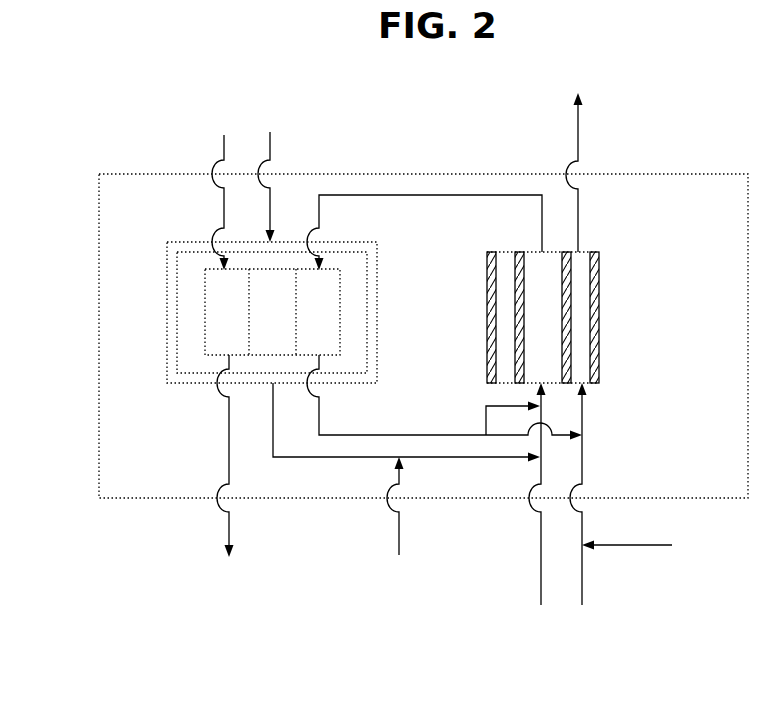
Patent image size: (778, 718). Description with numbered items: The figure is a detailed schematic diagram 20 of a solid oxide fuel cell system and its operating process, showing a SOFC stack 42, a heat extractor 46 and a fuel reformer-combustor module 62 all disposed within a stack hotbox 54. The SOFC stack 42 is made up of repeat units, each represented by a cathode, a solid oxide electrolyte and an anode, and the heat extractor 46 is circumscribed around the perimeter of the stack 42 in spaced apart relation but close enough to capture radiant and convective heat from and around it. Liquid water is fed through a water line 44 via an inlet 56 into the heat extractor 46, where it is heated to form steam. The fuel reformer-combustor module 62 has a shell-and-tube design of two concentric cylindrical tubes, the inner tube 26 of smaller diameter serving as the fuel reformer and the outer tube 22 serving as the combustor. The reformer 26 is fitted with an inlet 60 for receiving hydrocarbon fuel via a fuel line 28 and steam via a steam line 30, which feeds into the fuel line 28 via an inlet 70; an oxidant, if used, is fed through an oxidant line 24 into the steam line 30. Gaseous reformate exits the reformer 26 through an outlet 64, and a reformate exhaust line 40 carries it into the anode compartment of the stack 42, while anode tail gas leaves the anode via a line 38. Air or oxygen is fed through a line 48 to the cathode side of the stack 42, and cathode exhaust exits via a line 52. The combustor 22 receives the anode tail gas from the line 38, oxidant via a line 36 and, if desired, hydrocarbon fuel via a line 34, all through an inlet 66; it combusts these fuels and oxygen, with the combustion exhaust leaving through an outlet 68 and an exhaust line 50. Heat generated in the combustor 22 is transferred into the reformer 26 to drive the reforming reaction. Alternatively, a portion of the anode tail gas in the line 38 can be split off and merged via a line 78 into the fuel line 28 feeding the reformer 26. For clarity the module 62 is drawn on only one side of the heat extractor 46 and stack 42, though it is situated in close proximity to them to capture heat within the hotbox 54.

The schematic diagram 20 is at (408, 133).
The combustor/outer tube 22 is at (588, 298).
The oxidant line 24 is at (384, 507).
The inner tube (reformer) 26 is at (547, 350).
The fuel line 28 is at (541, 583).
The steam line 30 is at (358, 457).
The hydrocarbon fuel line 34 is at (582, 578).
The oxidant line 36 is at (650, 545).
The anode tail gas line 38 is at (338, 433).
The reformate exhaust line 40 is at (408, 195).
The SOFC stack 42 is at (205, 348).
The water line 44 is at (270, 148).
The heat extractor 46 is at (168, 327).
The air line 48 is at (224, 148).
The exhaust line 50 is at (578, 127).
The cathode exhaust line 52 is at (229, 535).
The stack hotbox 54 is at (99, 240).
The inlet 56 is at (271, 237).
The inlet 60 is at (537, 384).
The fuel reformer-combustor module 62 is at (600, 313).
The outlet 64 is at (544, 252).
The inlet 66 is at (584, 385).
The outlet 68 is at (580, 252).
The inlet 70 is at (537, 460).
The line 78 is at (486, 420).